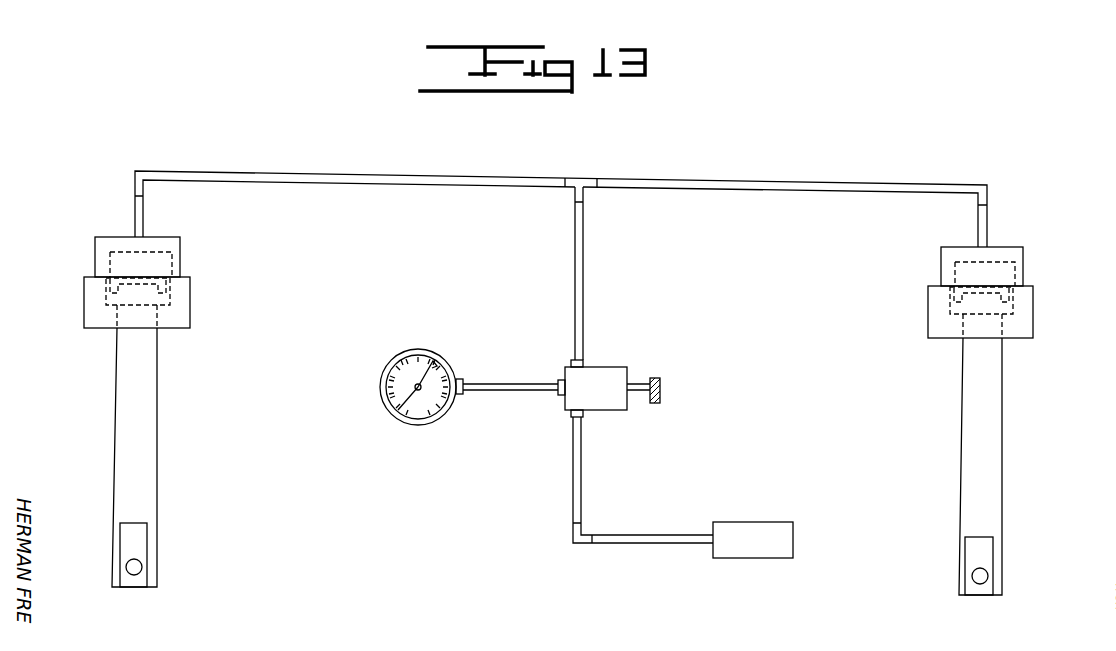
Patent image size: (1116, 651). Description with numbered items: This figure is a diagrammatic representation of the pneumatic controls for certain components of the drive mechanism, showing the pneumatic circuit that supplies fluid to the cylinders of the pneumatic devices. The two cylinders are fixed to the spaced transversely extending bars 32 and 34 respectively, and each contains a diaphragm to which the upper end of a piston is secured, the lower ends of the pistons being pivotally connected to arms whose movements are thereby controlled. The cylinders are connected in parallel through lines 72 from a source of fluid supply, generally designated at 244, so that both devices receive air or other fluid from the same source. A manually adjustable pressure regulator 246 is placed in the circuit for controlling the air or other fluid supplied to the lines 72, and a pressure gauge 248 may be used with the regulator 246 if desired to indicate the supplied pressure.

The transversely extending bar 32 is at (82, 320).
The transversely extending bar 34 is at (1035, 325).
The conduit 72 is at (445, 184).
The source of fluid supply 244 is at (752, 528).
The manually adjustable pressure regulator 246 is at (626, 367).
The pressure gauge 248 is at (432, 423).